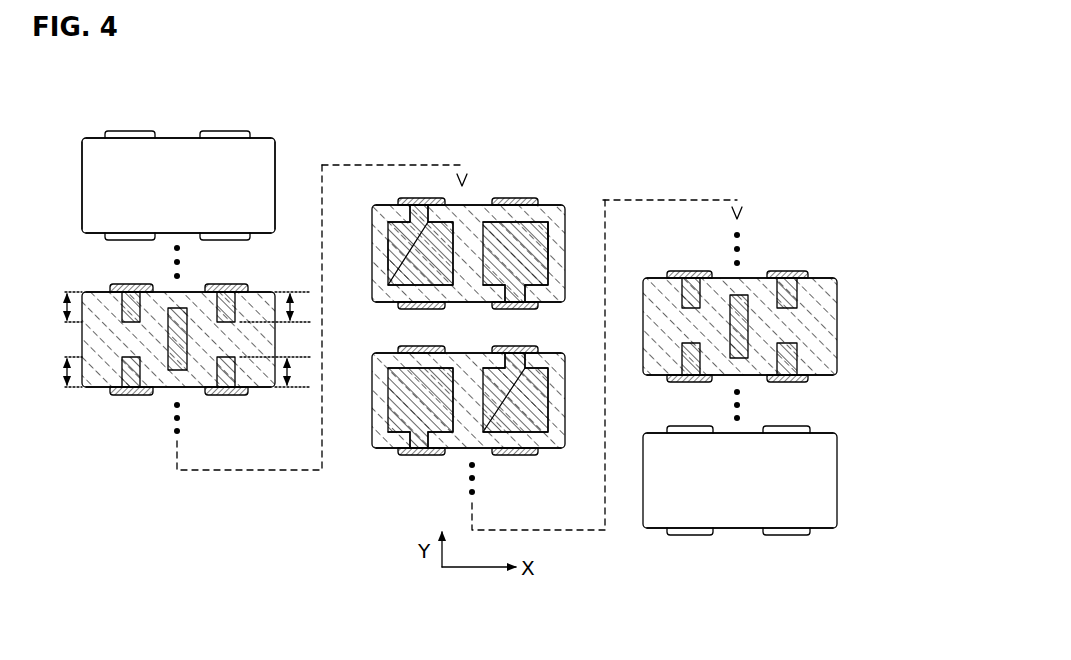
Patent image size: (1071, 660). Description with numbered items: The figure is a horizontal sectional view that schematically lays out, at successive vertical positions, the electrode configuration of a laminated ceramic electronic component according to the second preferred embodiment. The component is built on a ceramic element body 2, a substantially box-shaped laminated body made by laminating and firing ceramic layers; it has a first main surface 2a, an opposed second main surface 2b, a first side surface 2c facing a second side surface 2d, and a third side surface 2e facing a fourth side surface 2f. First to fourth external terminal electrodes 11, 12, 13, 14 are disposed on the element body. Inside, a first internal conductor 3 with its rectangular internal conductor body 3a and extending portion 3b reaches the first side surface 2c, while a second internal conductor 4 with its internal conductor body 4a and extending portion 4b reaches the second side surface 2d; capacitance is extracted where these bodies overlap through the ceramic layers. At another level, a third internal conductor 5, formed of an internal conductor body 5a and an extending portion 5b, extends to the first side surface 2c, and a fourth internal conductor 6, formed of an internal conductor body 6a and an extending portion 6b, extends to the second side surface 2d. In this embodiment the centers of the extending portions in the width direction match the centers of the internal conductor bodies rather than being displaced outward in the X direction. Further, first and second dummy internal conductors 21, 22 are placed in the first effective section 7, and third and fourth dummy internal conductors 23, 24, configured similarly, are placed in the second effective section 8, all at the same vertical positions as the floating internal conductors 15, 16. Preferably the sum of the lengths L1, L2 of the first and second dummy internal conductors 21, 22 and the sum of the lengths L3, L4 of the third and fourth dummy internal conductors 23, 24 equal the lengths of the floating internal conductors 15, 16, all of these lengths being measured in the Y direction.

The ceramic element body 2 is at (80, 184).
The first main surface 2a is at (178, 150).
The second main surface 2b is at (820, 448).
The first side surface 2c is at (190, 137).
The second side surface 2d is at (188, 236).
The third side surface 2e is at (82, 162).
The fourth side surface 2f is at (277, 155).
The first internal conductor 3 is at (424, 87).
The internal conductor body 3a is at (390, 248).
The extending portion 3b is at (408, 217).
The second internal conductor 4 is at (318, 503).
The internal conductor body 4a is at (388, 417).
The extending portion 4b is at (408, 435).
The third internal conductor 5 is at (578, 470).
The internal conductor body 5a is at (548, 432).
The extending portion 5b is at (525, 365).
The fourth internal conductor 6 is at (645, 118).
The internal conductor body 6a is at (550, 235).
The extending portion 6b is at (525, 293).
The first effective section 7 is at (386, 264).
The second effective section 8 is at (553, 213).
The first external terminal electrode 11 is at (128, 131).
The second external terminal electrode 12 is at (118, 240).
The third external terminal electrode 13 is at (222, 130).
The fourth external terminal electrode 14 is at (223, 242).
The floating internal conductor 15 is at (188, 350).
The floating internal conductor 16 is at (737, 295).
The first dummy internal conductor 21 is at (122, 305).
The second dummy internal conductor 22 is at (122, 362).
The third dummy internal conductor 23 is at (795, 245).
The fourth dummy internal conductor 24 is at (238, 363).
The length of first dummy internal conductor L1 is at (169, 307).
The length of second dummy internal conductor L2 is at (169, 372).
The length of third dummy internal conductor L3 is at (280, 309).
The length of fourth dummy internal conductor L4 is at (280, 371).